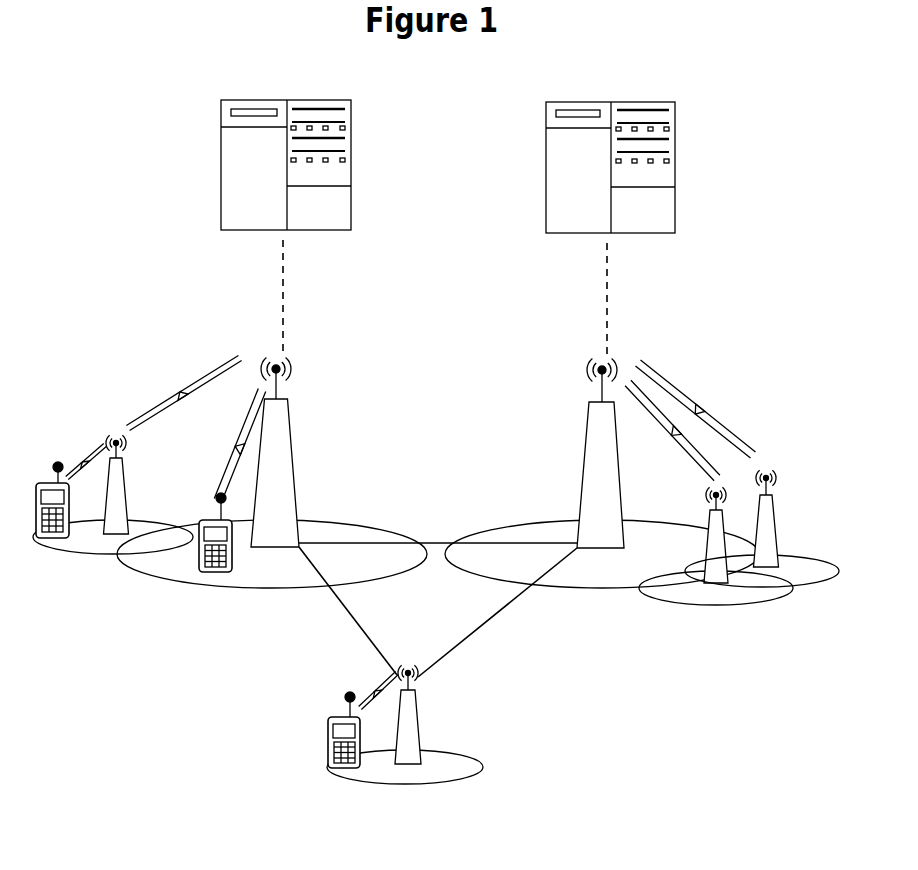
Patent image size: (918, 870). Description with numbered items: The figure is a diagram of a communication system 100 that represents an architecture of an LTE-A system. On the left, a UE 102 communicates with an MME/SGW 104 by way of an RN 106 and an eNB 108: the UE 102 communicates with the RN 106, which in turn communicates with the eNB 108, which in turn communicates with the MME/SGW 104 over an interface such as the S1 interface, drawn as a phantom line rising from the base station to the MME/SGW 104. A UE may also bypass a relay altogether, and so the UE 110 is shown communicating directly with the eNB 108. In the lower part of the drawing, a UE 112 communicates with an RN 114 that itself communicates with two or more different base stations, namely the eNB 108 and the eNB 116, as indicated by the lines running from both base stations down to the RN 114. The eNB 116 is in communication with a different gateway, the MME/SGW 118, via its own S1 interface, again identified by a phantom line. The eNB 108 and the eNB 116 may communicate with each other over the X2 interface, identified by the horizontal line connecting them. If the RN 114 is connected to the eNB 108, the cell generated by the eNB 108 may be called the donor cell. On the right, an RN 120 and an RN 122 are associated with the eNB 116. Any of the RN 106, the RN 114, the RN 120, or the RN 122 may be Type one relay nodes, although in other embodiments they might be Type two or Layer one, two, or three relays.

The communication system 100 is at (747, 294).
The UE 102 is at (58, 465).
The MME/SGW 104 is at (221, 128).
The RN 106 is at (123, 470).
The eNB 108 is at (279, 486).
The UE 110 is at (219, 498).
The UE 112 is at (348, 697).
The RN 114 is at (410, 735).
The eNB 116 is at (591, 487).
The MME/SGW 118 is at (546, 128).
The RN 120 is at (720, 520).
The RN 122 is at (767, 507).